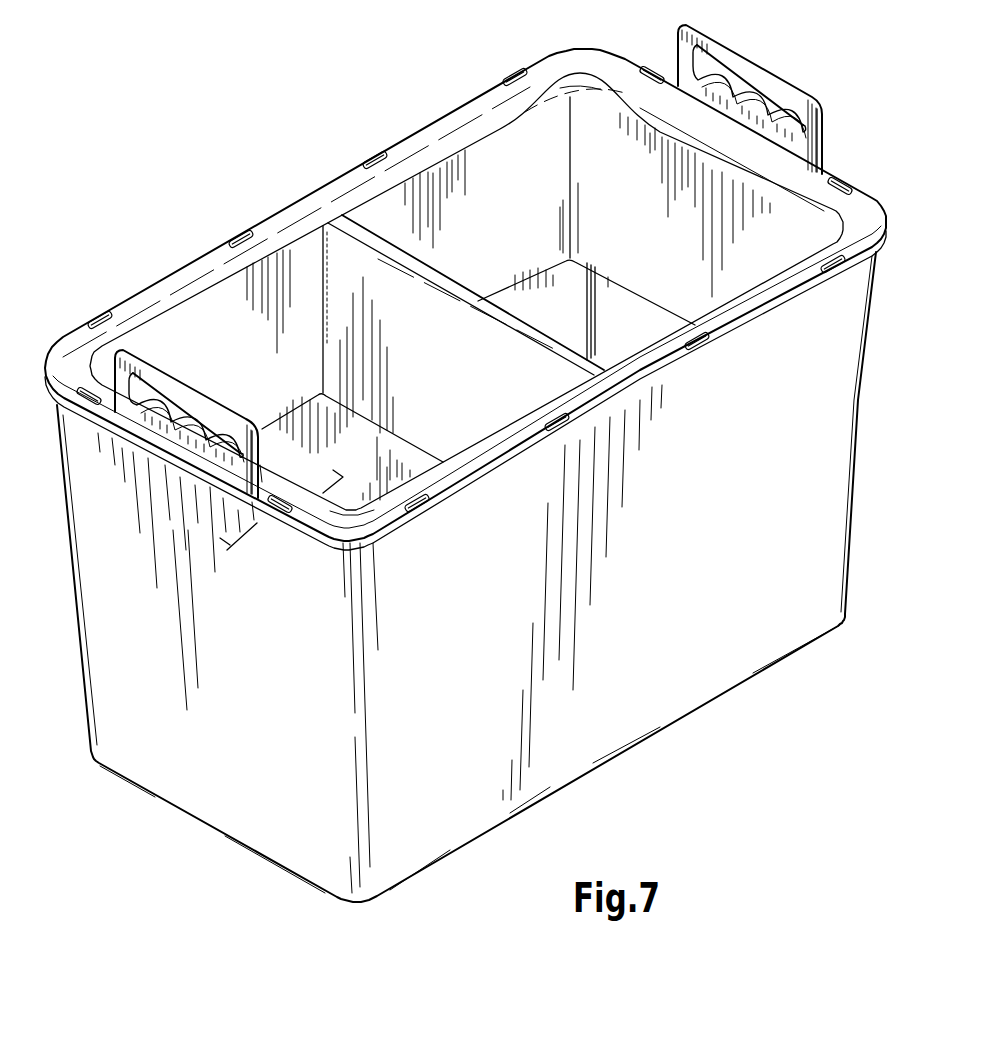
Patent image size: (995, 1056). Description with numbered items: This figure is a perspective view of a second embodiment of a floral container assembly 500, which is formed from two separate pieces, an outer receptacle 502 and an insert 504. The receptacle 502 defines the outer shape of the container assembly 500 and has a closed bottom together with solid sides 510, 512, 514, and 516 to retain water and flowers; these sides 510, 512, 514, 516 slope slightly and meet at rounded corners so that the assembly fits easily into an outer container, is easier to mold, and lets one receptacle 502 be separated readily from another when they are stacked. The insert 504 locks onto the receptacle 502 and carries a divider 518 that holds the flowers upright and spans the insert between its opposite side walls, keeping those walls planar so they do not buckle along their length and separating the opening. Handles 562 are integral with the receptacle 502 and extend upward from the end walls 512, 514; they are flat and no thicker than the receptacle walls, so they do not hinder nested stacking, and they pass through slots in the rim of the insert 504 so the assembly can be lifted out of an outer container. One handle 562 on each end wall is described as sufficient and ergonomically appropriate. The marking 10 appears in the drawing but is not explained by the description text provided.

The floral container assembly 500 is at (207, 200).
The outer receptacle 502 is at (80, 672).
The insert 504 is at (302, 193).
The side 510 is at (564, 318).
The end wall 512 is at (253, 773).
The end wall 514 is at (663, 333).
The side 516 is at (650, 665).
The divider 518 is at (390, 247).
The handle 562 is at (768, 68).
The section line indicator 10 is at (256, 496).